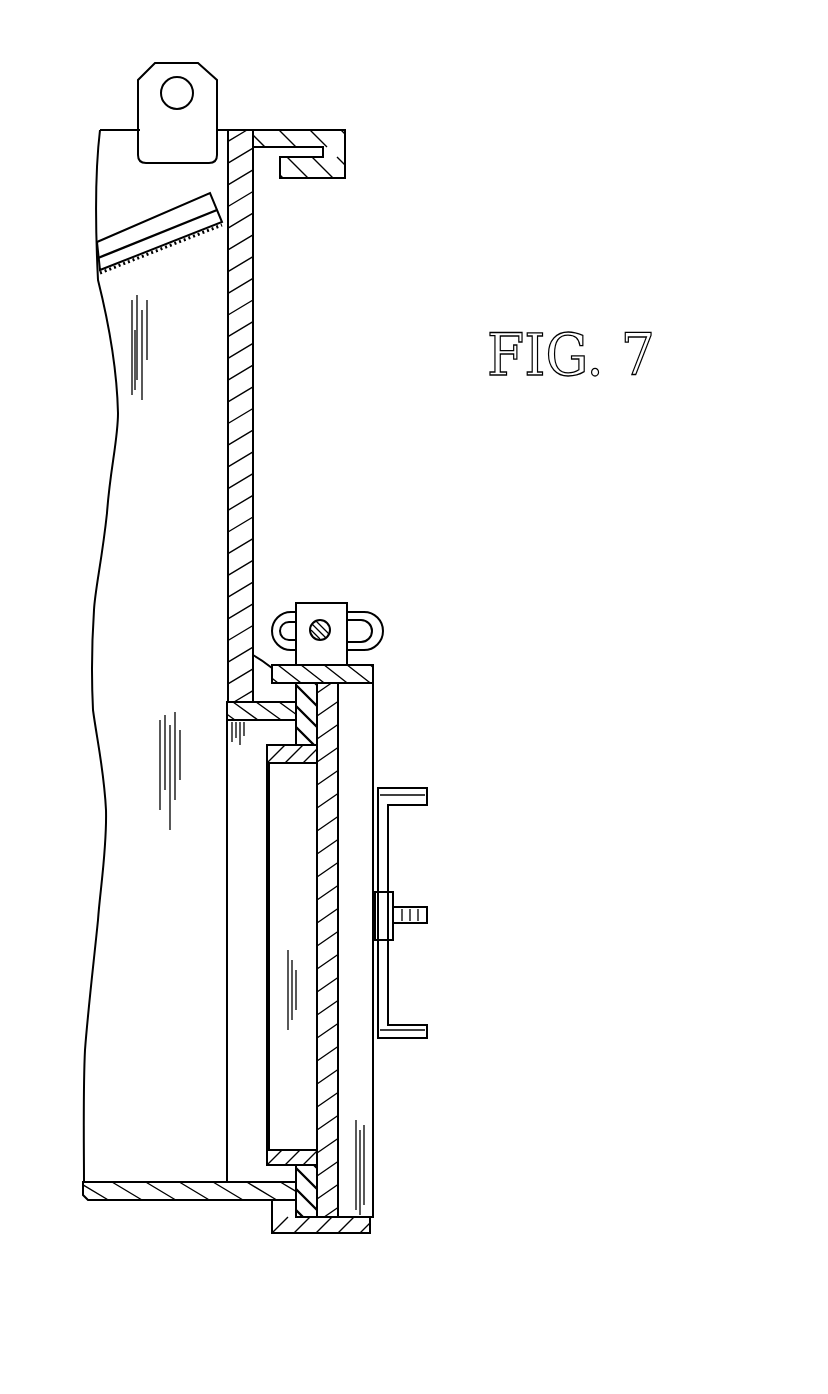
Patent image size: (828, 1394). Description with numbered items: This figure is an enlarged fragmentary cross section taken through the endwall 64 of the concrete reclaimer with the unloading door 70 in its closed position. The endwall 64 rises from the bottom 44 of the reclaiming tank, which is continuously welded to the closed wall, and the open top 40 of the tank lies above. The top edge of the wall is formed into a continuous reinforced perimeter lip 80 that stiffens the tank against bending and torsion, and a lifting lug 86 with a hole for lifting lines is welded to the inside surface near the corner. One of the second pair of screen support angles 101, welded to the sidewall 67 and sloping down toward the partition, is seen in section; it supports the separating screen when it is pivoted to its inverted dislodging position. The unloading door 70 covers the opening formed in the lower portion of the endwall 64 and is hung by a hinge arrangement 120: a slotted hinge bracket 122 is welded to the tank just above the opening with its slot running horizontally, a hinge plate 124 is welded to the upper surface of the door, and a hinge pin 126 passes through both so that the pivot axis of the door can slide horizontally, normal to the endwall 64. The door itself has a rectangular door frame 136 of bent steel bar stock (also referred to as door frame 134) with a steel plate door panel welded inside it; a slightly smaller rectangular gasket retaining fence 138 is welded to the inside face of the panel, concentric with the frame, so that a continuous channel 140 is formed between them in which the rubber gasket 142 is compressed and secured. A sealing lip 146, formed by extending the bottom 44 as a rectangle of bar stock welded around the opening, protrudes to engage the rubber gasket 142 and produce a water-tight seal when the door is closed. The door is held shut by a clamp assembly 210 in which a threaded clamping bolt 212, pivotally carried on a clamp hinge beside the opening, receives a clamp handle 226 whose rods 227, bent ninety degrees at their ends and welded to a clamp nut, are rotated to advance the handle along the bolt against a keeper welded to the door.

The open top 40 is at (290, 295).
The bottom 44 is at (203, 1200).
The endwall 64 is at (253, 408).
The sidewall 67 is at (130, 455).
The unloading door 70 is at (412, 1102).
The perimeter lip 80 is at (345, 152).
The lifting lug 86 is at (208, 72).
The screen support angle 101 is at (148, 219).
The hinge assembly 120 is at (438, 592).
The slotted hinge bracket 122 is at (364, 612).
The hinge plate 124 is at (306, 603).
The hinge pin 126 is at (322, 622).
The door frame 134 is at (374, 1210).
The door frame 136 is at (340, 725).
The gasket retaining fence 138 is at (267, 798).
The channel 140 is at (250, 751).
The rubber gasket 142 is at (294, 1183).
The sealing lip 146 is at (278, 730).
The latch assembly 210 is at (430, 872).
The clamping bolt 212 is at (427, 915).
The clamp handle 226 is at (396, 782).
The rods 227 is at (423, 787).